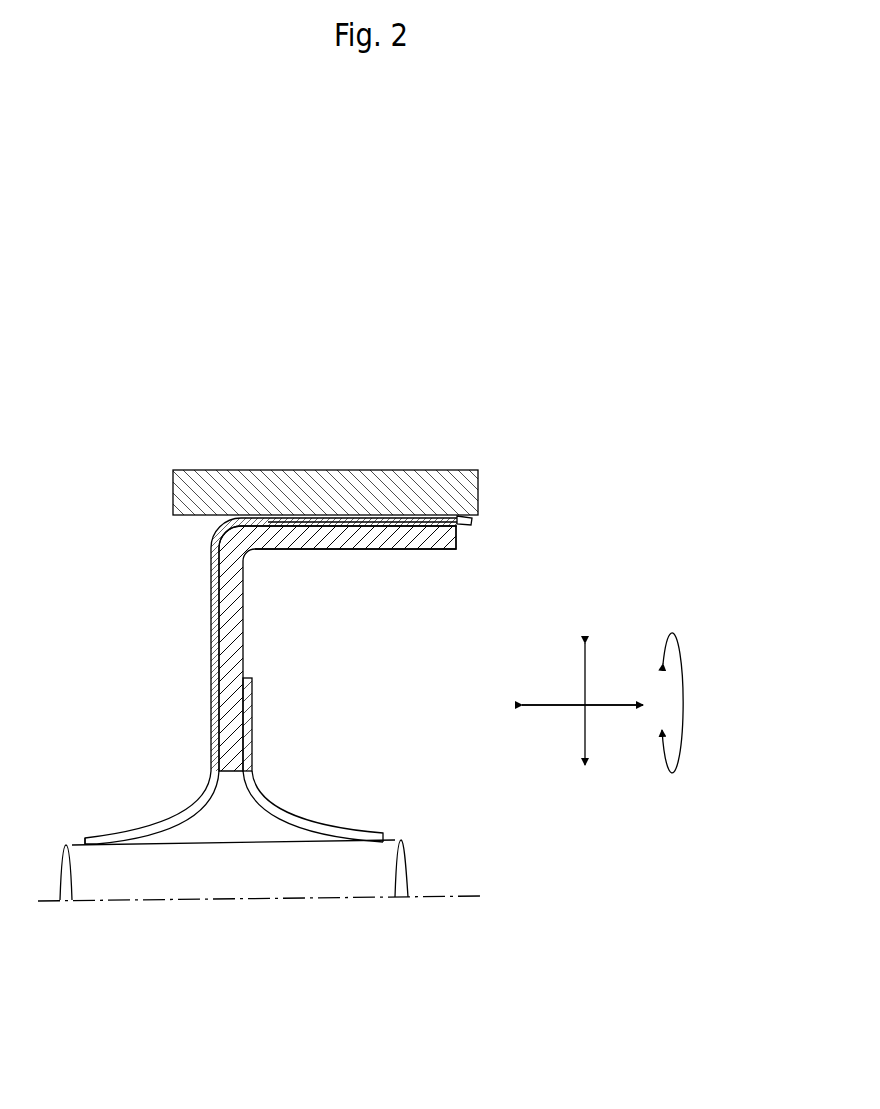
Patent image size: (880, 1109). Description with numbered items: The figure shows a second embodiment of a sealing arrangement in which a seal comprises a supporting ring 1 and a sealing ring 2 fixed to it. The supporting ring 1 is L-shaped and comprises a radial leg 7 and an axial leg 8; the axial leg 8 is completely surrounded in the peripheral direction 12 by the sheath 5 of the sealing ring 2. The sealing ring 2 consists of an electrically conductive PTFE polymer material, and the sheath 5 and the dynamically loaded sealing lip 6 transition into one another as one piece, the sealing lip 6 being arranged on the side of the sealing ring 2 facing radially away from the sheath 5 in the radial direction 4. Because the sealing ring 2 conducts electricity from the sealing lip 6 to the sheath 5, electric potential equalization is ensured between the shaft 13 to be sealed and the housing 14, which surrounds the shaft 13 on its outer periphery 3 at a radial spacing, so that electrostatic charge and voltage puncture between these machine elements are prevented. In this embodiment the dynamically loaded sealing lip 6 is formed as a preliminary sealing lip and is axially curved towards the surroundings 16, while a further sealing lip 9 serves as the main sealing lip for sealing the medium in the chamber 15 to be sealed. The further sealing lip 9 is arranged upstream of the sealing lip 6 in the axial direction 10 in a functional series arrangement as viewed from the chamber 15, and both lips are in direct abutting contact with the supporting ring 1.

The supporting ring 1 is at (233, 607).
The sealing ring 2 is at (170, 823).
The outer periphery 3 is at (309, 526).
The radial direction 4 is at (585, 685).
The sheath 5 is at (403, 516).
The dynamically loaded sealing lip 6 is at (100, 841).
The radial leg 7 is at (225, 640).
The axial leg 8 is at (410, 535).
The further sealing lip 9 is at (315, 826).
The axial direction 10 is at (615, 705).
The peripheral direction 12 is at (682, 727).
The shaft 13 is at (272, 881).
The housing 14 is at (258, 497).
The chamber 15 is at (419, 682).
The surroundings 16 is at (122, 602).